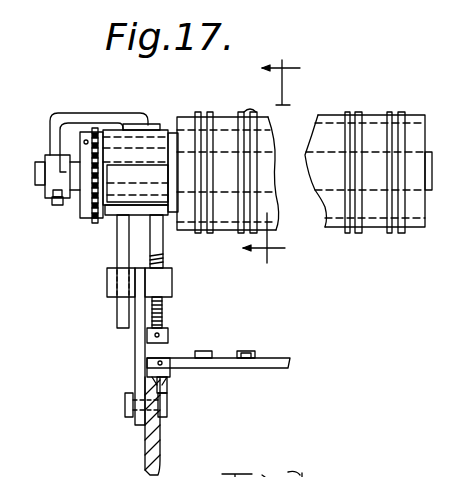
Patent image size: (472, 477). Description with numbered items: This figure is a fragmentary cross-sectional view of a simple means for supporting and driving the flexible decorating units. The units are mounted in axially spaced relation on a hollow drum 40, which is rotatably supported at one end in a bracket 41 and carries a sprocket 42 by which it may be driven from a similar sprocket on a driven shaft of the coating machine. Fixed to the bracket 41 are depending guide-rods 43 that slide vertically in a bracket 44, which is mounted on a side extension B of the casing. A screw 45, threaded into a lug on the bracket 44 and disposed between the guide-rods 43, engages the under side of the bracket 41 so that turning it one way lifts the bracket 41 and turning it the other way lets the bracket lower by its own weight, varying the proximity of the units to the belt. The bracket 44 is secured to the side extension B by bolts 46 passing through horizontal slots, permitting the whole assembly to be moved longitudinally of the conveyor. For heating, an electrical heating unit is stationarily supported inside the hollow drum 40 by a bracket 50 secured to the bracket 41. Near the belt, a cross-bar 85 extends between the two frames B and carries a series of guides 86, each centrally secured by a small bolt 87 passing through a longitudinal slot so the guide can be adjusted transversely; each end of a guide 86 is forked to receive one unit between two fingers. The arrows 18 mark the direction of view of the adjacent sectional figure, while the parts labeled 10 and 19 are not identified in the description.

The drum 10 is at (413, 228).
The section line 18 is at (263, 164).
The drum section 19 is at (318, 208).
The drum 40 is at (251, 112).
The bracket 41 is at (128, 157).
The sprocket 42 is at (88, 210).
The guide-rods 43 is at (118, 250).
The bracket 44 is at (137, 362).
The screw 45 is at (162, 313).
The bolts 46 is at (128, 407).
The bracket 50 is at (118, 113).
The cross-bar 85 is at (222, 362).
The guides 86 is at (255, 355).
The bolt 87 is at (247, 352).
The side extension B is at (145, 442).